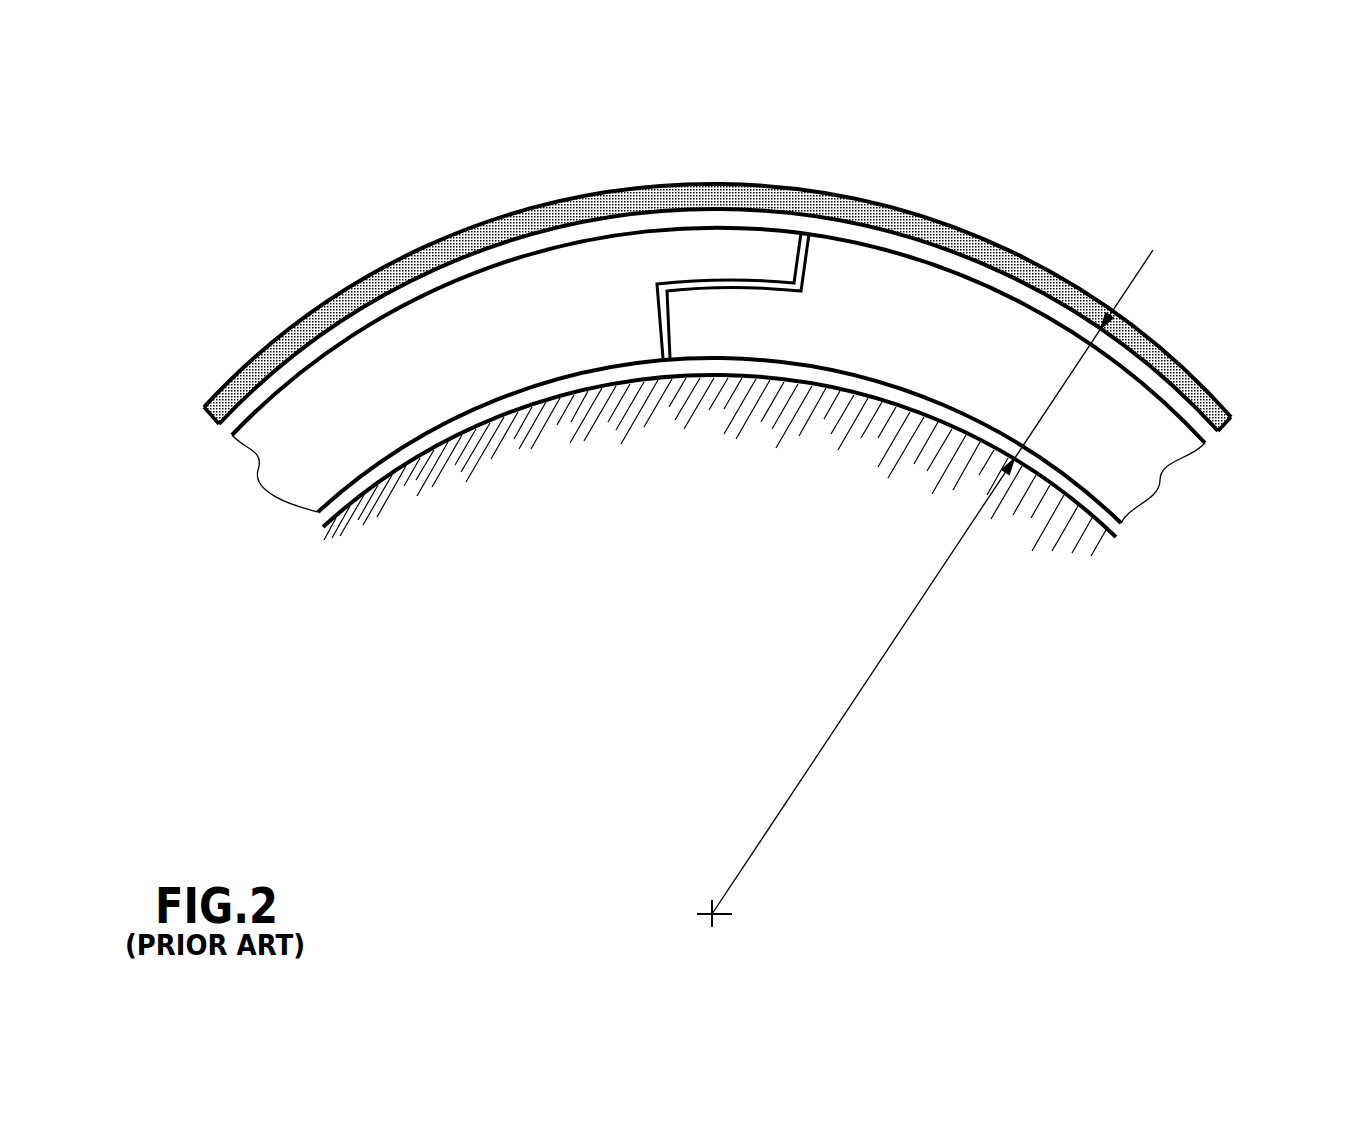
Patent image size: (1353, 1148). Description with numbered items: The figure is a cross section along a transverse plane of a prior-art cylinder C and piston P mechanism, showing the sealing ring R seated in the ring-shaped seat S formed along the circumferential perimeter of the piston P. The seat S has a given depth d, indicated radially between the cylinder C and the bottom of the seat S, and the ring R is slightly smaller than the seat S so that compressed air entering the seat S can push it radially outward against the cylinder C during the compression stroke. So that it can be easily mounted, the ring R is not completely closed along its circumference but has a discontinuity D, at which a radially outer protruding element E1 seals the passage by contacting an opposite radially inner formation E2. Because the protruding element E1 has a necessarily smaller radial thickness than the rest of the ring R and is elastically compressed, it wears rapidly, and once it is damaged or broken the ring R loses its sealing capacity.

The discontinuity D is at (739, 297).
The cylinder C is at (890, 220).
The radially outer protruding element E1 is at (758, 252).
The radially inner formation E2 is at (712, 337).
The ring-shaped seat S is at (500, 380).
The piston P is at (510, 435).
The sealing ring R is at (1138, 457).
The depth d is at (925, 586).